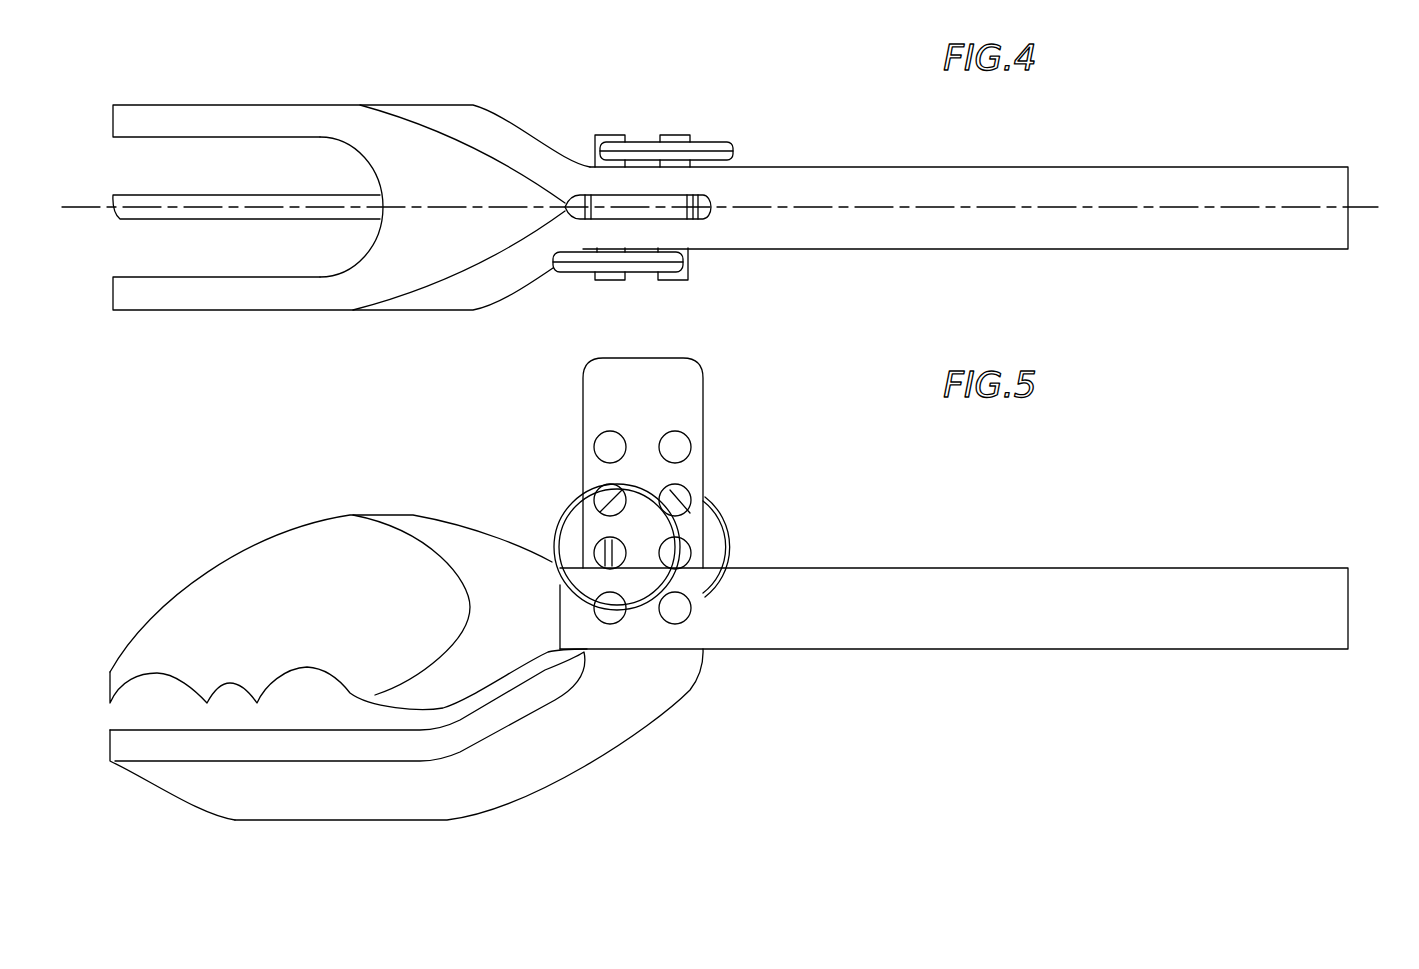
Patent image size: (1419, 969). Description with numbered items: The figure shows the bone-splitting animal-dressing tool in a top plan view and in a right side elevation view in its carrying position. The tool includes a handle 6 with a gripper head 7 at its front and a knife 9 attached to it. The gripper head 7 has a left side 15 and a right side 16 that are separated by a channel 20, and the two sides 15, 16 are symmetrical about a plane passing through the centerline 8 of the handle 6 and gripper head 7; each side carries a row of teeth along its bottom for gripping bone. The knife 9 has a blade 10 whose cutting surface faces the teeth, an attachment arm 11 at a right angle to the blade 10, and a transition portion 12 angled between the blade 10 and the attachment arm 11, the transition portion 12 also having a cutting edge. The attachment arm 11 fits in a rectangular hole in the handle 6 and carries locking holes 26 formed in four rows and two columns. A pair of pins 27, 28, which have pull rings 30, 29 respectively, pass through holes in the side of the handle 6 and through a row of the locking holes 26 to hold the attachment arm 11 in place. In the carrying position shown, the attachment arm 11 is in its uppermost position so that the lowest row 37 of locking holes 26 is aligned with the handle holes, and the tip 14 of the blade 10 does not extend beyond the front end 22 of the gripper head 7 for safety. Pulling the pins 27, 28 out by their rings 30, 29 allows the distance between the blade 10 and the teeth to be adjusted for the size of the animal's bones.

In FIG. 4, the handle 6 is at (1153, 240).
In FIG. 5, the handle 6 is at (1153, 633).
In FIG. 4, the gripper head 7 is at (351, 207).
In FIG. 5, the gripper head 7 is at (404, 577).
In FIG. 4, the centerline 8 is at (1363, 207).
In FIG. 5, the knife 9 is at (417, 777).
In FIG. 5, the blade 10 is at (343, 797).
In FIG. 5, the attachment arm 11 is at (703, 397).
In FIG. 5, the transition portion 12 is at (507, 712).
In FIG. 4, the tip 14 is at (117, 208).
In FIG. 5, the tip 14 is at (110, 748).
In FIG. 4, the left side 15 is at (167, 104).
In FIG. 4, the right side 16 is at (163, 310).
In FIG. 4, the channel 20 is at (277, 160).
In FIG. 5, the front end 22 is at (103, 685).
In FIG. 5, the locking holes 26 is at (693, 517).
In FIG. 4, the pin 27 is at (613, 280).
In FIG. 4, the pin 28 is at (680, 135).
In FIG. 4, the pull ring 29 is at (713, 141).
In FIG. 4, the pull ring 30 is at (563, 278).
In FIG. 5, the lowest row 37 is at (610, 625).